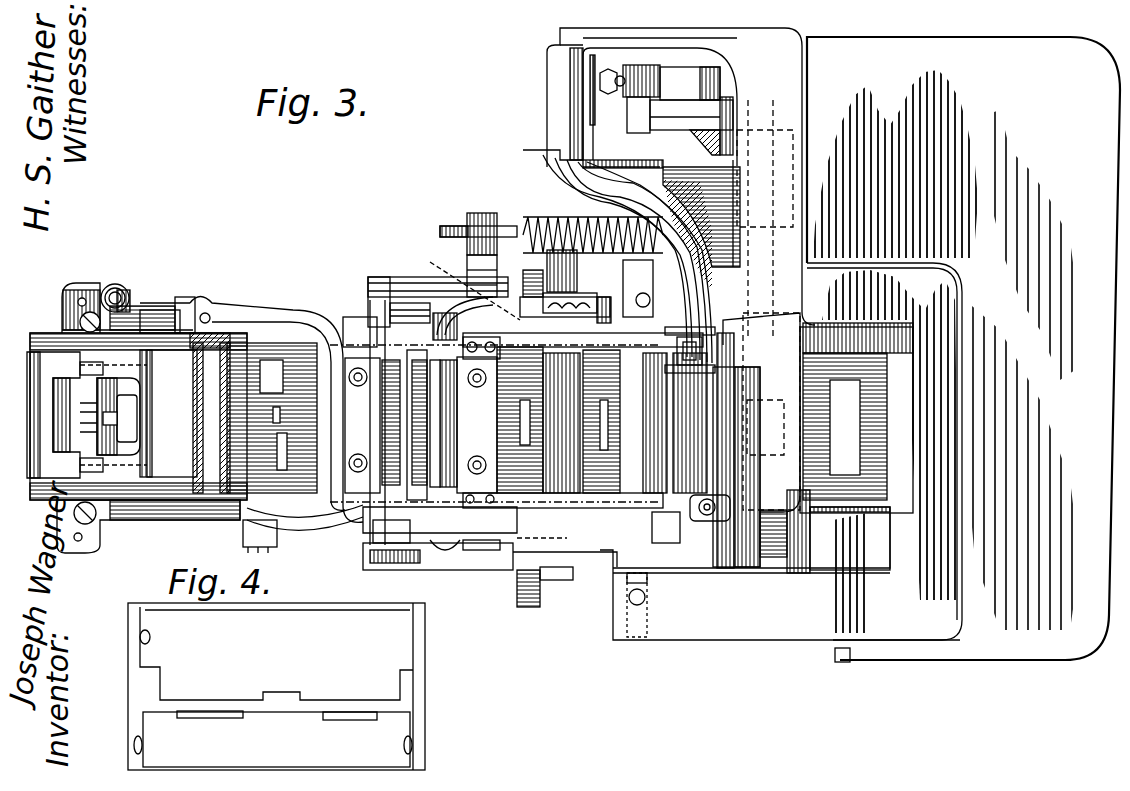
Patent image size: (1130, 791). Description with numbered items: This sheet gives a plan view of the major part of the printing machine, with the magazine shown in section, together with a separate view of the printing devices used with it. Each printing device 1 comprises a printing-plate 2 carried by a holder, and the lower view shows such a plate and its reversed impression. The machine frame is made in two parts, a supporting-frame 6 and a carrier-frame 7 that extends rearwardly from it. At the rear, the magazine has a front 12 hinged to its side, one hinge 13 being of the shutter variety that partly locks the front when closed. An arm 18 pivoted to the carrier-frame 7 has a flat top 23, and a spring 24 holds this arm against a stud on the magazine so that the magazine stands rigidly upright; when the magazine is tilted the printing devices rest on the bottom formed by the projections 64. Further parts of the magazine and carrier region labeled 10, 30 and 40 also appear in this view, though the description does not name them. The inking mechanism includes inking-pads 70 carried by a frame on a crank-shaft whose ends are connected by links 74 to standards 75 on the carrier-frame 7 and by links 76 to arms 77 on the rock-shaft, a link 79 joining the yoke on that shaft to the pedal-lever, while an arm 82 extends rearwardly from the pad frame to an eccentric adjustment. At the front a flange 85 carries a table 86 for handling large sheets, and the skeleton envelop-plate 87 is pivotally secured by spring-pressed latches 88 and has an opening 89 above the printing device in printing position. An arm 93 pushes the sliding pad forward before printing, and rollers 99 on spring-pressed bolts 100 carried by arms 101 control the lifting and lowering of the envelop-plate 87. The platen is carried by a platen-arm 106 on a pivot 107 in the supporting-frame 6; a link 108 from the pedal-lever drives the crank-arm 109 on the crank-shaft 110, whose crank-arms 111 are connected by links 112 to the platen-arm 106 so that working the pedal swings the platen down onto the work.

In FIG. 3, the printing device 1 is at (478, 420).
In FIG. 4, the printing device 1 is at (425, 684).
In FIG. 4, the printing-plate 2 is at (395, 746).
In FIG. 3, the supporting-frame 6 is at (701, 213).
In FIG. 3, the carrier-frame 7 is at (360, 310).
In FIG. 3, the base housing 10 is at (218, 503).
In FIG. 3, the front 12 is at (333, 420).
In FIG. 3, the hinge 13 is at (209, 316).
In FIG. 3, the arm 18 is at (148, 303).
In FIG. 3, the flat top 23 is at (180, 300).
In FIG. 3, the spring 24 is at (118, 284).
In FIG. 3, the block 30 is at (662, 78).
In FIG. 3, the coil spring 40 is at (560, 217).
In FIG. 3, the projections 64 is at (275, 365).
In FIG. 3, the inking-pads 70 is at (356, 463).
In FIG. 3, the links 74 is at (450, 583).
In FIG. 3, the standards 75 is at (490, 573).
In FIG. 3, the links 76 is at (395, 305).
In FIG. 3, the arms 77 is at (400, 278).
In FIG. 3, the link 79 is at (510, 223).
In FIG. 3, the arm 82 is at (362, 367).
In FIG. 3, the flange 85 is at (790, 627).
In FIG. 3, the table 86 is at (963, 349).
In FIG. 3, the envelop-plate 87 is at (605, 502).
In FIG. 3, the spring-pressed latches 88 is at (648, 300).
In FIG. 3, the opening 89 is at (775, 555).
In FIG. 3, the arm 93 is at (612, 312).
In FIG. 3, the rollers 99 is at (498, 396).
In FIG. 3, the spring-pressed bolts 100 is at (533, 268).
In FIG. 3, the arms 101 is at (570, 302).
In FIG. 3, the platen-arm 106 is at (690, 235).
In FIG. 3, the pivot 107 is at (598, 70).
In FIG. 3, the link 108 is at (703, 108).
In FIG. 3, the crank-arm 109 is at (712, 146).
In FIG. 3, the crank-shaft 110 is at (765, 128).
In FIG. 3, the crank-arms 111 is at (722, 368).
In FIG. 3, the links 112 is at (702, 345).